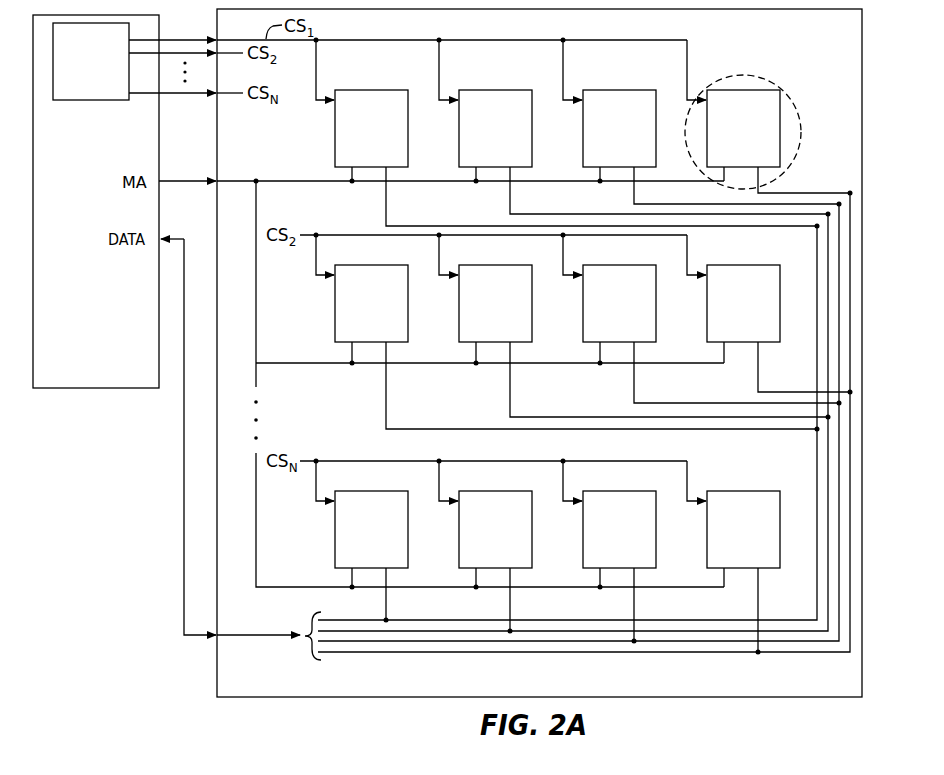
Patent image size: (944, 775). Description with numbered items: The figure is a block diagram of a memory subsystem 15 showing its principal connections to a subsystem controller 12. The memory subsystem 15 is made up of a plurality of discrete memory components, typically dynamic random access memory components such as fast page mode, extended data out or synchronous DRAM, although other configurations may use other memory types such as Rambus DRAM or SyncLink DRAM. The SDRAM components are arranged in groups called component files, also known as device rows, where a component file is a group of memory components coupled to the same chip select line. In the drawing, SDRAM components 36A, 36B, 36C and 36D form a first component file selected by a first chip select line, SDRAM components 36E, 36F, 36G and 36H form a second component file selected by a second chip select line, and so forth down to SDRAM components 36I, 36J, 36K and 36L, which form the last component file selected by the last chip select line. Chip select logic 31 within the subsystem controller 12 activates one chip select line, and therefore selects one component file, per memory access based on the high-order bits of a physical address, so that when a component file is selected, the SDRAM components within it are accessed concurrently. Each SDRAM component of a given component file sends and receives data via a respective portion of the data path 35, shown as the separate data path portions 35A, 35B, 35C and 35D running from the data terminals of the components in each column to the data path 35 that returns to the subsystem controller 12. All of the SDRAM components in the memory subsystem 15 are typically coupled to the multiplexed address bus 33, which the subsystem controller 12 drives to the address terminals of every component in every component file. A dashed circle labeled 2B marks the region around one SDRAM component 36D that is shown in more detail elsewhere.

The subsystem controller 12 is at (87, 381).
The memory subsystem 15 is at (852, 686).
The chip select logic 31 is at (82, 101).
The multiplexed address bus 33 is at (190, 180).
The data path 35 is at (173, 239).
The data path portion 35A is at (386, 200).
The data path portion 35B is at (510, 197).
The data path portion 35C is at (634, 190).
The data path portion 35D is at (758, 176).
The SDRAM component 36A is at (377, 90).
The SDRAM component 36B is at (501, 90).
The SDRAM component 36C is at (625, 90).
The SDRAM component 36D is at (749, 90).
The SDRAM component 36E is at (377, 265).
The SDRAM component 36F is at (501, 265).
The SDRAM component 36G is at (625, 265).
The SDRAM component 36H is at (749, 265).
The SDRAM component 36I is at (377, 491).
The SDRAM component 36J is at (501, 491).
The SDRAM component 36K is at (625, 491).
The SDRAM component 36L is at (749, 491).
The detail portion shown in FIG. 2B is at (798, 105).